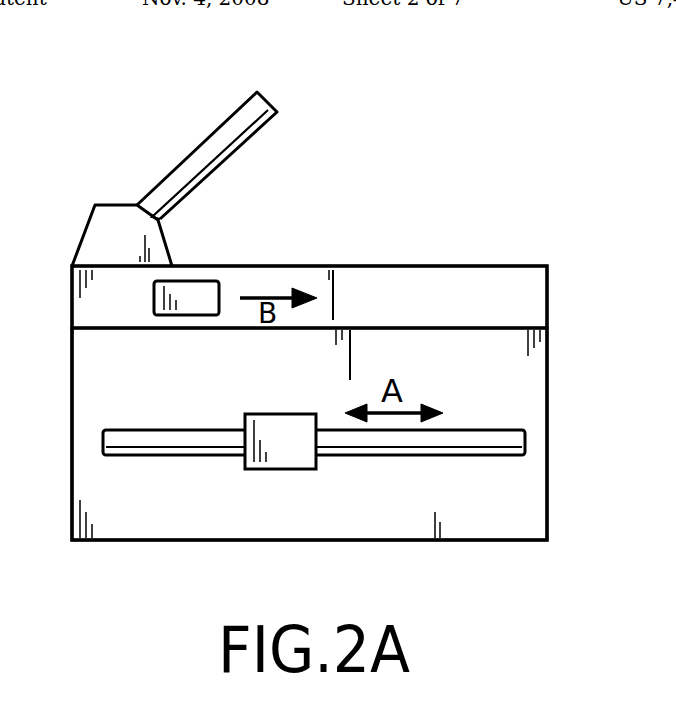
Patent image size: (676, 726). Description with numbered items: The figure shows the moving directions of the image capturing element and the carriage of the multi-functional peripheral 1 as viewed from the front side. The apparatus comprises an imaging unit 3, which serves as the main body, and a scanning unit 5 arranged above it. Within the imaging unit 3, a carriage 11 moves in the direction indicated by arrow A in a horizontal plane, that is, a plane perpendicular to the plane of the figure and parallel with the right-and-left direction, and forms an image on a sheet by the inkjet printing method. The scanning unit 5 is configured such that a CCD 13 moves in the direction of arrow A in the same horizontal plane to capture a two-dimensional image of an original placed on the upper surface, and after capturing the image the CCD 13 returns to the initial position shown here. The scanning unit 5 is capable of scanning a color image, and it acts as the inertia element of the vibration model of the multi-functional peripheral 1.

The multi-functional peripheral 1 is at (477, 172).
The imaging unit 3 is at (523, 405).
The scanning unit 5 is at (477, 292).
The carriage 11 is at (293, 450).
The CCD 13 is at (196, 303).